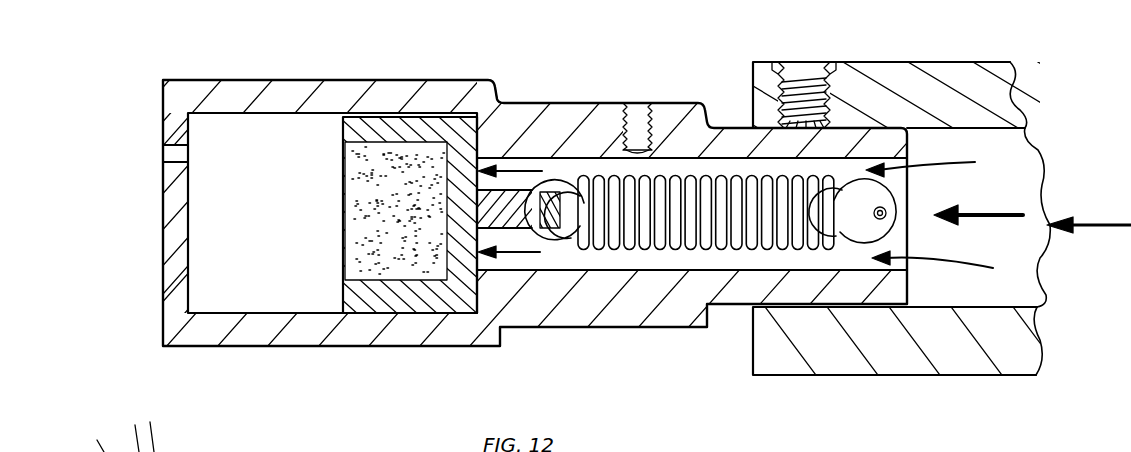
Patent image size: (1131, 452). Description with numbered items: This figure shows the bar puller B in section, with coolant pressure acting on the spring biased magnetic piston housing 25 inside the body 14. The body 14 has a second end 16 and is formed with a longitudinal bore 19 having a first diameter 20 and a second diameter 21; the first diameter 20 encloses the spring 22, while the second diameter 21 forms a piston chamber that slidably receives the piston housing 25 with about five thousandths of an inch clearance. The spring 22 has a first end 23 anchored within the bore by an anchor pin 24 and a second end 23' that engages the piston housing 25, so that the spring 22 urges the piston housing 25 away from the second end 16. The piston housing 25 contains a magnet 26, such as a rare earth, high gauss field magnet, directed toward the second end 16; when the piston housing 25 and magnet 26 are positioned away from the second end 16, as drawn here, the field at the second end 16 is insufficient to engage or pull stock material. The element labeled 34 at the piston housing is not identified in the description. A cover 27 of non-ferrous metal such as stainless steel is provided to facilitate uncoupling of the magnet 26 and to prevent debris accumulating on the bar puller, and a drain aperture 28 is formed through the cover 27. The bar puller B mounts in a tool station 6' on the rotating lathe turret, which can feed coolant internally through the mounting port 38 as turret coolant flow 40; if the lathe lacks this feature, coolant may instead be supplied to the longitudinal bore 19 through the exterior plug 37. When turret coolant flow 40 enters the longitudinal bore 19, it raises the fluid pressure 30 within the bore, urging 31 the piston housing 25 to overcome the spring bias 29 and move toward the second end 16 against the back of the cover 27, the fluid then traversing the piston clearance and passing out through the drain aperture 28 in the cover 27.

The body 14 is at (614, 115).
The piston housing 25 is at (461, 103).
The bar puller B is at (300, 87).
The second end 16 is at (198, 347).
The cover 27 is at (162, 252).
The drain aperture 28 is at (162, 153).
The second diameter 21 is at (297, 298).
The exterior plug 37 is at (640, 128).
The magnet 26 is at (343, 208).
The piston seal 34 is at (447, 315).
The second end of spring 23' is at (563, 180).
The longitudinal bore 19 is at (630, 250).
The first diameter 20 is at (715, 262).
The spring 22 is at (712, 178).
The first end of spring 23 is at (745, 140).
The anchor pin 24 is at (887, 208).
The spring bias 29 is at (830, 34).
The mounting port 38 is at (1003, 293).
The tool station 6' is at (907, 348).
The urging 31 is at (1013, 175).
The fluid pressure 30 is at (965, 256).
The turret coolant flow 40 is at (1120, 253).